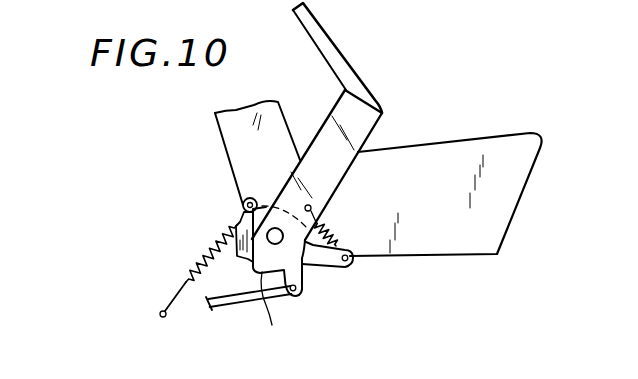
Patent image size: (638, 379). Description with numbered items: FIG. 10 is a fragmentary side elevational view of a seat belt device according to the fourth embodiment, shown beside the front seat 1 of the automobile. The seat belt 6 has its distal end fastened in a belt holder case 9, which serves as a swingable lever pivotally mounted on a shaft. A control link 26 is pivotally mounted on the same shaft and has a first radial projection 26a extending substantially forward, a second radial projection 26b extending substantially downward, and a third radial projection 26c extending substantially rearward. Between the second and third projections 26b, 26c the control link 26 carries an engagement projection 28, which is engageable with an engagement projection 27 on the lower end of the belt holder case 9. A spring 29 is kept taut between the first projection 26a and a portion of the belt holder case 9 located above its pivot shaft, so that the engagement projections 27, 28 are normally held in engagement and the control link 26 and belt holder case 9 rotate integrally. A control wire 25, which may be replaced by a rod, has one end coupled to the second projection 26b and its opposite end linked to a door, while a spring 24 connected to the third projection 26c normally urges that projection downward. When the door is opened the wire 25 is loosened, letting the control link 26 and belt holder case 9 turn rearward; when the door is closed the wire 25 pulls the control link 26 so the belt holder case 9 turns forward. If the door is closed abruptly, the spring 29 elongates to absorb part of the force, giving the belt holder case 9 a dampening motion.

The front seat 1 is at (427, 151).
The seat belt 6 is at (352, 78).
The belt holder case 9 is at (328, 124).
The spring 24 is at (197, 258).
The control wire 25 is at (232, 307).
The control link 26 is at (240, 217).
The first radial projection 26a is at (354, 262).
The second radial projection 26b is at (299, 292).
The third radial projection 26c is at (252, 198).
The engagement projection 27 is at (272, 325).
The engagement projection 28 is at (213, 247).
The spring 29 is at (337, 221).